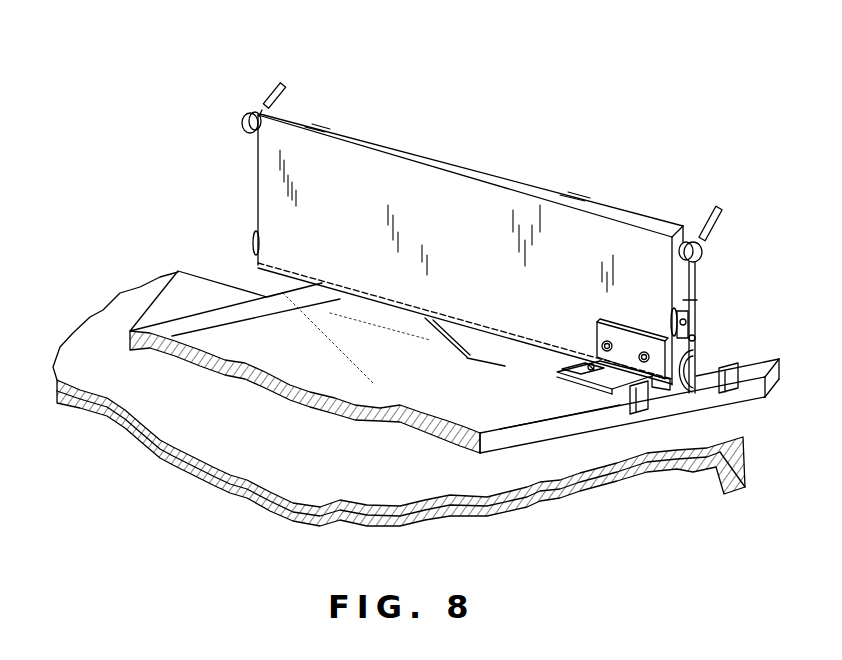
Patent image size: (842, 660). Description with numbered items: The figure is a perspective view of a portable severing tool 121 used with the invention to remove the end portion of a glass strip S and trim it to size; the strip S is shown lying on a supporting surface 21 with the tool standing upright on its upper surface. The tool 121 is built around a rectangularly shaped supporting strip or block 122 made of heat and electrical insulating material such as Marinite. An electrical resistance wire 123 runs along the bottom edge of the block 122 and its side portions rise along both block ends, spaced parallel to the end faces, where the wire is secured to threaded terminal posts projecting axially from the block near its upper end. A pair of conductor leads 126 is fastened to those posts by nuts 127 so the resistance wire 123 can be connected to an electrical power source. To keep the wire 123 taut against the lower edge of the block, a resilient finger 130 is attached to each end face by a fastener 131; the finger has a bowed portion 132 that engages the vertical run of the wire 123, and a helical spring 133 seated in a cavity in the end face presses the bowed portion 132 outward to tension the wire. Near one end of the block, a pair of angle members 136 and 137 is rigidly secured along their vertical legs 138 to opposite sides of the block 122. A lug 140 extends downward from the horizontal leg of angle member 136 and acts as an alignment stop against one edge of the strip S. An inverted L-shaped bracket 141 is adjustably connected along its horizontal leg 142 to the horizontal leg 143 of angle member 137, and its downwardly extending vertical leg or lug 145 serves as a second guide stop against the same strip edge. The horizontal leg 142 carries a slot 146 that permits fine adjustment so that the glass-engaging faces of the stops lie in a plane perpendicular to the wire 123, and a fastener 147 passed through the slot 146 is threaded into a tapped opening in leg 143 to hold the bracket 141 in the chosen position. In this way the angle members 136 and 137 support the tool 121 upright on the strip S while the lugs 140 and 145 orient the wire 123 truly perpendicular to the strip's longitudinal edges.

The table 21 is at (100, 424).
The glass strip S is at (205, 334).
The portable severing tool 121 is at (478, 151).
The supporting strip or block 122 is at (385, 179).
The electrical resistance wire 123 is at (695, 285).
The conductor leads 126 is at (279, 86).
The nuts 127 is at (247, 117).
The resilient finger 130 is at (697, 330).
The fastener 131 is at (680, 323).
The bowed portion 132 is at (254, 242).
The helical spring 133 is at (690, 382).
The angle member 136 is at (637, 384).
The angle member 137 is at (586, 344).
The vertical legs 138 is at (604, 341).
The lug 140 is at (738, 383).
The inverted L-shaped bracket 141 is at (618, 414).
The horizontal leg 142 is at (656, 386).
The horizontal leg 143 is at (557, 375).
The vertical leg or lug 145 is at (644, 408).
The slot 146 is at (626, 393).
The fastener 147 is at (588, 366).